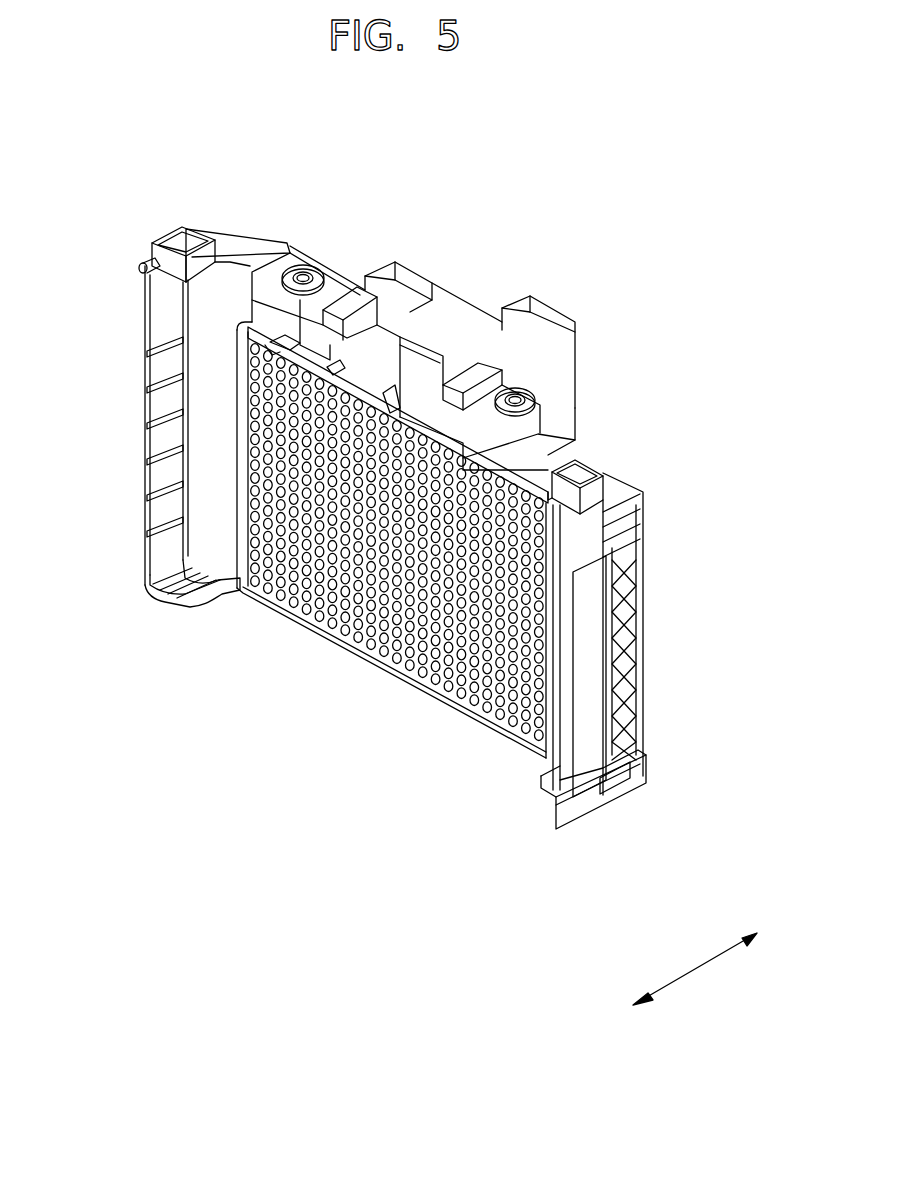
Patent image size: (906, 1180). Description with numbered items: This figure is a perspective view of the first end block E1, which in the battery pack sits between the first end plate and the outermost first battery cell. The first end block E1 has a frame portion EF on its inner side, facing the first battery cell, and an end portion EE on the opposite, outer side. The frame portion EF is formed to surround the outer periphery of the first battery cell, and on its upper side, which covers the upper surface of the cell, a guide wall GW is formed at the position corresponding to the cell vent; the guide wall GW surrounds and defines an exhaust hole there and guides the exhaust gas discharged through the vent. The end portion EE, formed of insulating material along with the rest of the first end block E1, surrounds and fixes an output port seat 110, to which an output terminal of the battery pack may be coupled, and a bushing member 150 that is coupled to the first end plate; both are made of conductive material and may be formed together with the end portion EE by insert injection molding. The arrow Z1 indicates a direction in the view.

The first end block E1 is at (140, 219).
The guide wall GW is at (392, 405).
The output port seat 110 is at (528, 397).
The bushing member 150 is at (606, 478).
The end portion EE is at (647, 787).
The frame portion EF is at (573, 810).
The direction Z1 is at (695, 969).